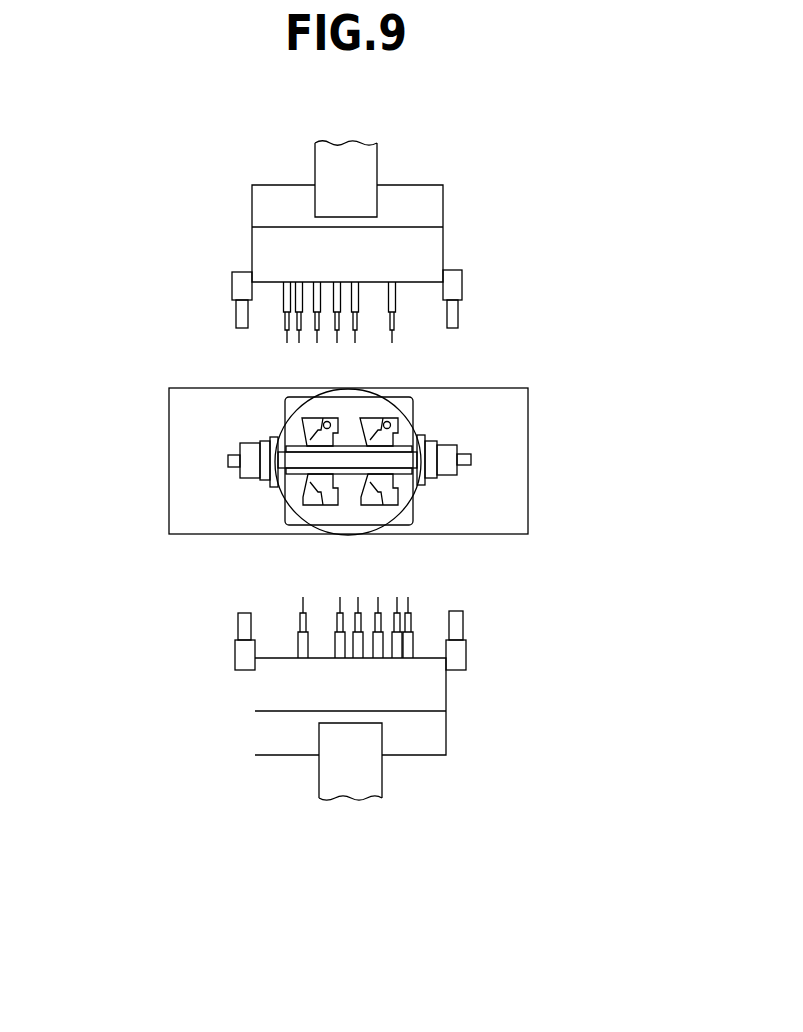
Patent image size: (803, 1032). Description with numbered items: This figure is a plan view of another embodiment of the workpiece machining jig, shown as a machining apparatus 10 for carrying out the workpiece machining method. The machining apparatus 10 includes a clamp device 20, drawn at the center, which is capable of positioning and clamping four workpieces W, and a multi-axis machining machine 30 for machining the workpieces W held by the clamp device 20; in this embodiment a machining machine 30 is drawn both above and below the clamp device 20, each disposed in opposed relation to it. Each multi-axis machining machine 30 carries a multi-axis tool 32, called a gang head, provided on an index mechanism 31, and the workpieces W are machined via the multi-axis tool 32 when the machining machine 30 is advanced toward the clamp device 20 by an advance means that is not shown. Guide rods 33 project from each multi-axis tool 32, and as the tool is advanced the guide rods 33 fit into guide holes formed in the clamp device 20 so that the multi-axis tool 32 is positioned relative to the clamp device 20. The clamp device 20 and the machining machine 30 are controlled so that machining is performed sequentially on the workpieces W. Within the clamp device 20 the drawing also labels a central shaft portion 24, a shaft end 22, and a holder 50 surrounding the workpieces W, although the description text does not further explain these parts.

The machining apparatus 10 is at (126, 200).
The clamp device 20 is at (242, 430).
The shaft end 22 is at (262, 478).
The rotating shaft 24 is at (471, 457).
The multi-axis machining machine 30 is at (445, 147).
The index mechanism 31 is at (315, 168).
The multi-axis tool 32 is at (437, 255).
The guide rod 33 is at (455, 315).
The magnet holder 50 is at (405, 440).
The workpiece W is at (315, 430).